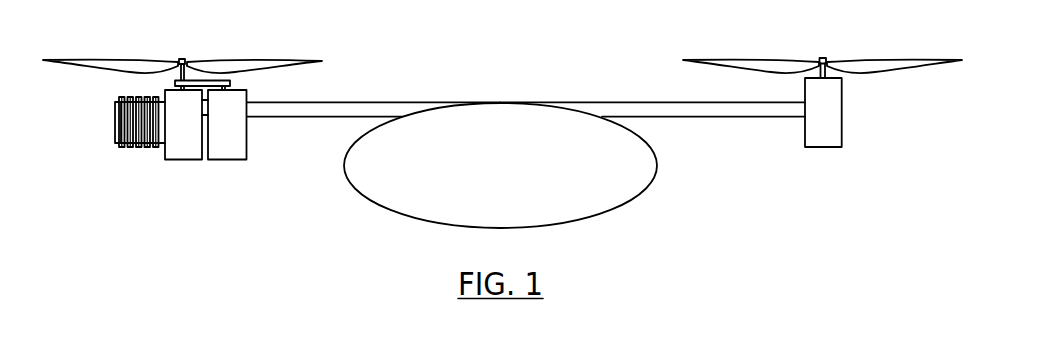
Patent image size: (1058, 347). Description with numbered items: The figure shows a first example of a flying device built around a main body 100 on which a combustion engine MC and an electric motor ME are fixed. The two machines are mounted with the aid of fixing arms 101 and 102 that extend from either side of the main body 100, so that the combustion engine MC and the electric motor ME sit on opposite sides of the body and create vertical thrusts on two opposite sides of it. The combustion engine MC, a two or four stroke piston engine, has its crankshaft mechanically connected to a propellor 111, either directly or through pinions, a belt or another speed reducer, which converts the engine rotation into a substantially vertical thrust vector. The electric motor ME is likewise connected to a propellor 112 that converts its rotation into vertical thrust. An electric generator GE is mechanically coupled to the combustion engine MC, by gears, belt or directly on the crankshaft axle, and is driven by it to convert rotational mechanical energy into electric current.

The main body 100 is at (657, 163).
The fixing arm 101 is at (335, 103).
The fixing arm 102 is at (618, 102).
The propellor 111 is at (224, 61).
The propellor 112 is at (765, 58).
The combustion engine MC is at (165, 157).
The electric generator GE is at (247, 152).
The electric motor ME is at (842, 125).